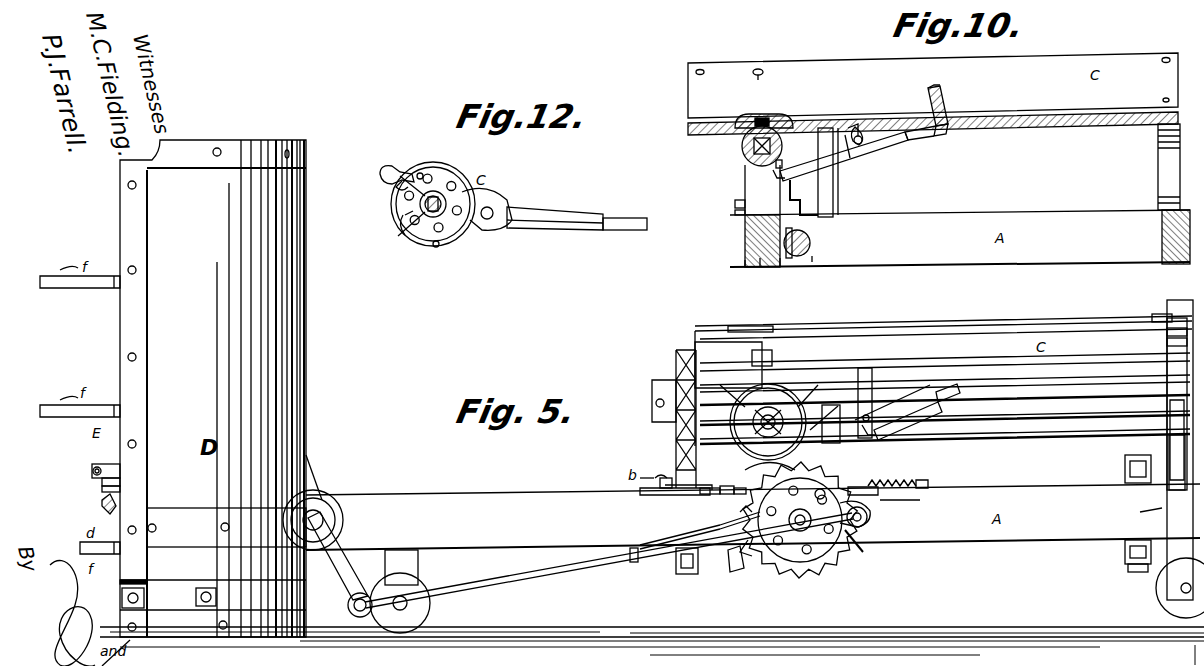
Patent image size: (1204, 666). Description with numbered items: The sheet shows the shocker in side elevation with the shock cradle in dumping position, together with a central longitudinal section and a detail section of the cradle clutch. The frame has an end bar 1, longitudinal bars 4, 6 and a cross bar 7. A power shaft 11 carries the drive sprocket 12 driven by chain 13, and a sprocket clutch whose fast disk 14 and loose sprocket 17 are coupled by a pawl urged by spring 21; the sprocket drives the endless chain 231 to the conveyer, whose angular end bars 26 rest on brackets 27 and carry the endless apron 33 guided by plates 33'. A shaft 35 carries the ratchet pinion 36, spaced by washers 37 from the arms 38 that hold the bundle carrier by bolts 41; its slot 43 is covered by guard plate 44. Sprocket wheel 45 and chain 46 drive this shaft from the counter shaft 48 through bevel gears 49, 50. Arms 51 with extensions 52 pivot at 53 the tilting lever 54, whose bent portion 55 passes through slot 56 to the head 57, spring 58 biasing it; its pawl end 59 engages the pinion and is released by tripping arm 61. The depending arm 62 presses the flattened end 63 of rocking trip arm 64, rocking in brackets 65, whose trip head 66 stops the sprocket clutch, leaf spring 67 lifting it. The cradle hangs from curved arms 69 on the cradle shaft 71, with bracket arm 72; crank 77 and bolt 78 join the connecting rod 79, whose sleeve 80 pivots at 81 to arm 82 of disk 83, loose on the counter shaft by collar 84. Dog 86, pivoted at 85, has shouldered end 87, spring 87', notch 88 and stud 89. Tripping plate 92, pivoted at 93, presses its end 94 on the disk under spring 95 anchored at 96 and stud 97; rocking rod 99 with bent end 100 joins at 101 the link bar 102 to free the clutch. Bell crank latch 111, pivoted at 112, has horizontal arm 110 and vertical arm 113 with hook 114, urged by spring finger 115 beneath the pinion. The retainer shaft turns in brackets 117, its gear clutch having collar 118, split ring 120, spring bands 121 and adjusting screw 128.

In FIG. 10, the end bar 1 is at (1160, 230).
In FIG. 5, the end bar 1 is at (1151, 516).
In FIG. 10, the longitudinal bar 4 is at (1040, 205).
In FIG. 5, the longitudinal bar 6 is at (985, 545).
In FIG. 10, the cross bar 7 is at (744, 240).
In FIG. 5, the power shaft 11 is at (1200, 512).
In FIG. 10, the drive sprocket 12 is at (1157, 168).
In FIG. 5, the drive sprocket 12 is at (1138, 572).
In FIG. 5, the chain 13 is at (1125, 552).
In FIG. 5, the disk 14 is at (636, 562).
In FIG. 5, the sprocket 17 is at (686, 574).
In FIG. 5, the spring 21 is at (676, 370).
In FIG. 5, the angular end bars 26 is at (745, 326).
In FIG. 5, the brackets 27 is at (1170, 450).
In FIG. 5, the endless apron 33 is at (943, 380).
In FIG. 5, the strips or plates 33' is at (950, 312).
In FIG. 10, the shaft 35 is at (742, 148).
In FIG. 5, the shaft 35 is at (768, 422).
In FIG. 10, the ratchet pinion 36 is at (748, 168).
In FIG. 10, the washer 37 is at (750, 178).
In FIG. 5, the arm 38 is at (752, 358).
In FIG. 10, the bolts 41 is at (758, 112).
In FIG. 5, the bolts 41 is at (780, 340).
In FIG. 10, the slot 43 is at (770, 120).
In FIG. 10, the guard plate 44 is at (770, 114).
In FIG. 5, the sprocket wheel 45 is at (775, 410).
In FIG. 5, the endless chain 46 is at (790, 395).
In FIG. 12, the counter shaft 48 is at (433, 211).
In FIG. 10, the counter shaft 48 is at (792, 258).
In FIG. 5, the counter shaft 48 is at (798, 530).
In FIG. 5, the bevel gear 49 is at (812, 572).
In FIG. 5, the bevel gear 50 is at (735, 568).
In FIG. 5, the arms 51 is at (865, 368).
In FIG. 10, the vertical parallel extensions 52 is at (858, 124).
In FIG. 5, the vertical parallel extensions 52 is at (900, 400).
In FIG. 10, the pivot 53 is at (860, 144).
In FIG. 5, the pivot 53 is at (866, 425).
In FIG. 10, the tilting lever 54 is at (900, 142).
In FIG. 5, the tilting lever 54 is at (910, 435).
In FIG. 10, the angular portion 55 is at (940, 134).
In FIG. 5, the angular portion 55 is at (950, 388).
In FIG. 10, the slot 56 is at (948, 124).
In FIG. 10, the head 57 is at (946, 96).
In FIG. 10, the spring 58 is at (848, 158).
In FIG. 5, the spring 58 is at (866, 435).
In FIG. 10, the pawl end 59 is at (776, 178).
In FIG. 5, the tripping arm 61 is at (827, 418).
In FIG. 10, the depending arm 62 is at (826, 130).
In FIG. 5, the depending arm 62 is at (832, 405).
In FIG. 10, the flattened end 63 is at (810, 238).
In FIG. 5, the flattened end 63 is at (834, 548).
In FIG. 10, the rocking trip arm 64 is at (735, 204).
In FIG. 5, the rocking trip arm 64 is at (680, 492).
In FIG. 10, the brackets 65 is at (800, 185).
In FIG. 5, the brackets 65 is at (665, 495).
In FIG. 5, the trip head 66 is at (660, 476).
In FIG. 10, the leaf spring 67 is at (812, 262).
In FIG. 5, the leaf spring 67 is at (668, 478).
In FIG. 5, the curved arms 69 is at (226, 527).
In FIG. 5, the cradle shaft 71 is at (330, 520).
In FIG. 5, the bracket arm 72 is at (318, 488).
In FIG. 5, the crank 77 is at (352, 560).
In FIG. 5, the bolt 78 is at (358, 614).
In FIG. 12, the connecting rod 79 is at (625, 218).
In FIG. 5, the connecting rod 79 is at (520, 578).
In FIG. 12, the sleeve 80 is at (570, 215).
In FIG. 5, the sleeve 80 is at (700, 530).
In FIG. 12, the pivot 81 is at (493, 210).
In FIG. 5, the pivot 81 is at (867, 512).
In FIG. 12, the arm 82 is at (488, 200).
In FIG. 5, the arm 82 is at (868, 526).
In FIG. 12, the disk 83 is at (470, 178).
In FIG. 12, the collar 84 is at (425, 212).
In FIG. 5, the collar 84 is at (732, 513).
In FIG. 12, the pivot 85 is at (430, 180).
In FIG. 12, the dog 86 is at (420, 174).
In FIG. 5, the dog 86 is at (800, 520).
In FIG. 12, the shouldered end 87 is at (453, 192).
In FIG. 12, the spring 87' is at (441, 243).
In FIG. 12, the notch 88 is at (396, 184).
In FIG. 5, the notch 88 is at (752, 552).
In FIG. 12, the stud 89 is at (410, 205).
In FIG. 5, the tripping plate 92 is at (870, 486).
In FIG. 5, the pivot 93 is at (821, 486).
In FIG. 12, the end 94 is at (392, 170).
In FIG. 5, the end 94 is at (862, 548).
In FIG. 5, the spring 95 is at (905, 480).
In FIG. 5, the connection 96 is at (920, 500).
In FIG. 5, the stud 97 is at (930, 482).
In FIG. 5, the rocking rod 99 is at (746, 506).
In FIG. 5, the laterally bent end 100 is at (708, 494).
In FIG. 5, the connection 101 is at (726, 494).
In FIG. 5, the link bar 102 is at (740, 494).
In FIG. 10, the horizontal arm 110 is at (760, 266).
In FIG. 10, the bell crank latch 111 is at (746, 266).
In FIG. 10, the pivot 112 is at (780, 266).
In FIG. 10, the vertical arm 113 is at (838, 200).
In FIG. 10, the lateral hook 114 is at (782, 165).
In FIG. 10, the spring finger 115 is at (735, 212).
In FIG. 5, the brackets 117 is at (100, 506).
In FIG. 5, the collar 118 is at (120, 488).
In FIG. 5, the split washer or ring 120 is at (120, 470).
In FIG. 5, the spring bands 121 is at (92, 466).
In FIG. 5, the screw 128 is at (94, 474).
In FIG. 5, the endless chain 231 is at (672, 370).